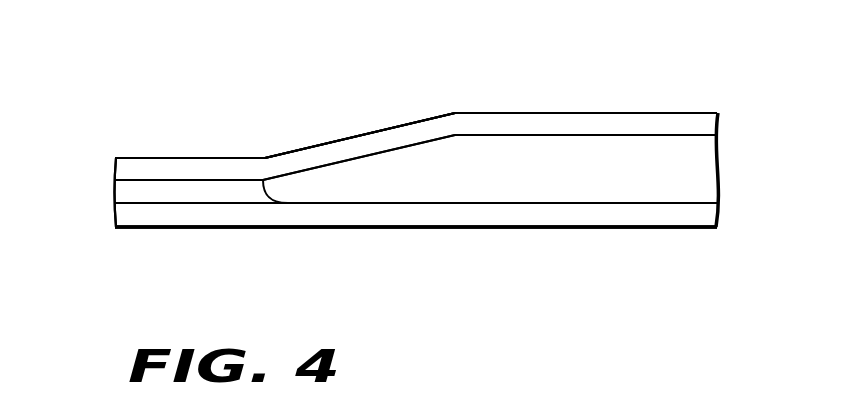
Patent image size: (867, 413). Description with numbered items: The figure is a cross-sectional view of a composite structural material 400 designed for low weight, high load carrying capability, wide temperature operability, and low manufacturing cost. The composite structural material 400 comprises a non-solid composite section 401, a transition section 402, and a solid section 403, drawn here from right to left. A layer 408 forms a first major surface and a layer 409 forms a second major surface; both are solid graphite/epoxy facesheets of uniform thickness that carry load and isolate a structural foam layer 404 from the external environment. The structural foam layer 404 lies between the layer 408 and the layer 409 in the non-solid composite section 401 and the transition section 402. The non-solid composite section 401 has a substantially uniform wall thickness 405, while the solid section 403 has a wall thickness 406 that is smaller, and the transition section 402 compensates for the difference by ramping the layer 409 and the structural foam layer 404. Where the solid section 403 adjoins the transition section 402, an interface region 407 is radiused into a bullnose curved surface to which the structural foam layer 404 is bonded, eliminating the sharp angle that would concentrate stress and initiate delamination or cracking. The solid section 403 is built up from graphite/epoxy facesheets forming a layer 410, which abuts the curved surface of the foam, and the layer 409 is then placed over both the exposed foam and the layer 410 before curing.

The composite structural material 400 is at (460, 337).
The non-solid composite section 401 is at (558, 84).
The transition section 402 is at (352, 113).
The solid section 403 is at (190, 135).
The structural foam layer 404 is at (612, 180).
The wall thickness 405 is at (740, 112).
The wall thickness 406 is at (97, 158).
The interface region 407 is at (253, 200).
The layer 408 is at (450, 213).
The layer 409 is at (644, 120).
The layer 410 is at (167, 193).